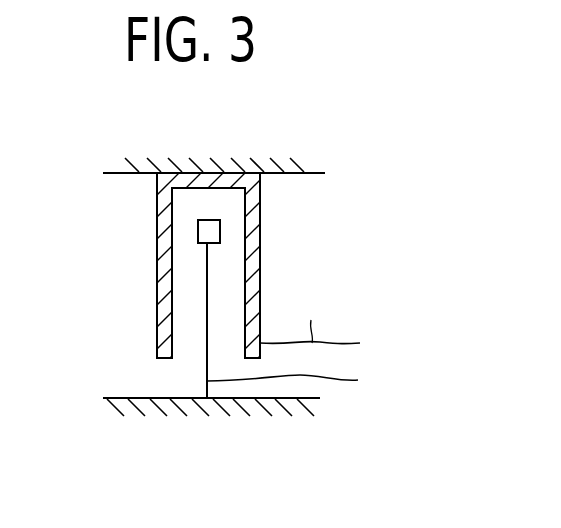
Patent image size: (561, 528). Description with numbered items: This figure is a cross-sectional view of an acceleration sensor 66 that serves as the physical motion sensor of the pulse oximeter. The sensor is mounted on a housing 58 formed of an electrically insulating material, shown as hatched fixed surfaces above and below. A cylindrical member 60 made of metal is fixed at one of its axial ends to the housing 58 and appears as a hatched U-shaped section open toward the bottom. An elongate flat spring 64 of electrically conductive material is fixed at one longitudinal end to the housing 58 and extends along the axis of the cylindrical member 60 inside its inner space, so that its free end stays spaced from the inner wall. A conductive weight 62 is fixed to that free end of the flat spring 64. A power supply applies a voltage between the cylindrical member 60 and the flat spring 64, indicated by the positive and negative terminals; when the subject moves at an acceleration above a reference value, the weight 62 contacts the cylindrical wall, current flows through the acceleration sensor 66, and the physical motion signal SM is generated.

The housing 58 is at (242, 170).
The cylindrical member 60 is at (251, 240).
The weight 62 is at (198, 231).
The elongate flat spring 64 is at (207, 300).
The acceleration sensor 66 is at (327, 274).